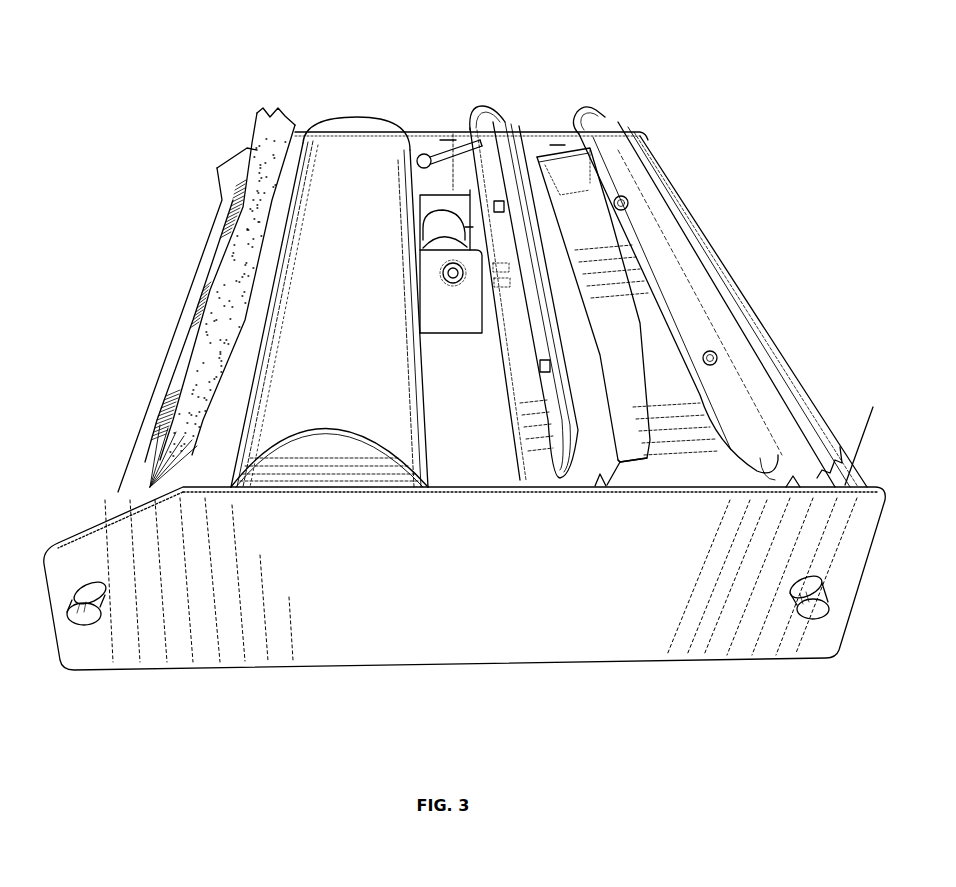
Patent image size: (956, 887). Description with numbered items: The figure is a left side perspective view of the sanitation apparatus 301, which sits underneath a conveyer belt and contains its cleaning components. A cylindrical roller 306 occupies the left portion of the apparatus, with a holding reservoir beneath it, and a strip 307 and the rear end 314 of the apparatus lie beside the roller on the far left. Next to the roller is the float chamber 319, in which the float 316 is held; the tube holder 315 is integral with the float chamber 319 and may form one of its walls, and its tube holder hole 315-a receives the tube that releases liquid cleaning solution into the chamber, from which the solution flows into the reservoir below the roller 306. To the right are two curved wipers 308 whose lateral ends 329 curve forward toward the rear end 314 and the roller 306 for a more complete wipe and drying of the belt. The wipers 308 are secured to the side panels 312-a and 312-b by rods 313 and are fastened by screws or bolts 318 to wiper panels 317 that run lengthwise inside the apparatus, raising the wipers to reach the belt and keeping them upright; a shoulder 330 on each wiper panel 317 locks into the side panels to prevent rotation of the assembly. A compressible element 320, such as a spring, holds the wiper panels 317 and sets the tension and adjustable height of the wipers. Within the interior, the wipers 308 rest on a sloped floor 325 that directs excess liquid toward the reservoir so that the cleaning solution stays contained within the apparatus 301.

The sanitation apparatus 301 is at (148, 203).
The cylindrical roller 306 is at (325, 123).
The flexible strip 307 is at (252, 143).
The wiper 308 is at (683, 243).
The side panel 312-a is at (418, 132).
The side panel 312-b is at (434, 638).
The rod 313 is at (85, 625).
The rear end 314 is at (148, 398).
The tube holder 315 is at (477, 333).
The tube holder hole 315-a is at (447, 298).
The float 316 is at (446, 206).
The wiper panel 317 is at (840, 447).
The screw or bolt 318 is at (628, 197).
The float chamber 319 is at (486, 198).
The compressible element 320 is at (447, 148).
The sloped floor 325 is at (638, 381).
The lateral end 329 is at (497, 130).
The shoulder 330 is at (606, 485).